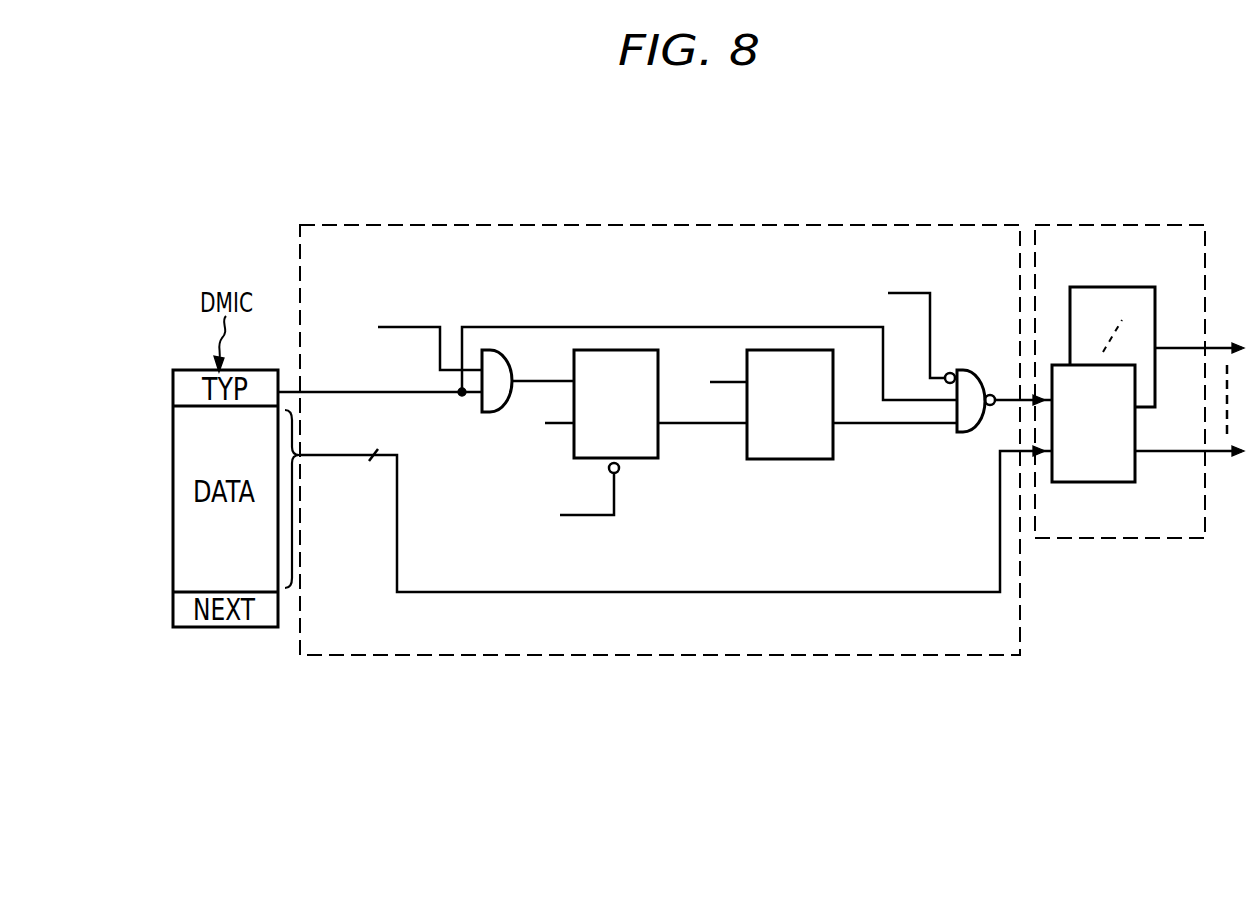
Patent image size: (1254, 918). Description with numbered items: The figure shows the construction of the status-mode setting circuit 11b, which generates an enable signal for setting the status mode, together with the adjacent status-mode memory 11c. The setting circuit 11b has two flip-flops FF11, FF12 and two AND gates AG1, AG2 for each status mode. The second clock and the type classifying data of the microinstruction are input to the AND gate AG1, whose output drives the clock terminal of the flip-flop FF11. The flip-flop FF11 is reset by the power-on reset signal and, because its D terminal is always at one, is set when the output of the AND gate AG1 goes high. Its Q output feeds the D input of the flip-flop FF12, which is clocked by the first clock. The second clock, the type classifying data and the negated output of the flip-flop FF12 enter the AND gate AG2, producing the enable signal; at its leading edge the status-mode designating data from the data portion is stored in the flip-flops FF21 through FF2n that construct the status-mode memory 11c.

The status-mode setting circuit 11b is at (830, 225).
The status-mode memory 11c is at (1072, 225).
The AND gate AG1 is at (516, 346).
The AND gate AG2 is at (967, 370).
The flip-flop FF11 is at (598, 350).
The flip-flop FF12 is at (757, 350).
The flip-flop FF21 is at (1100, 482).
The flip-flop FF2n is at (1155, 390).